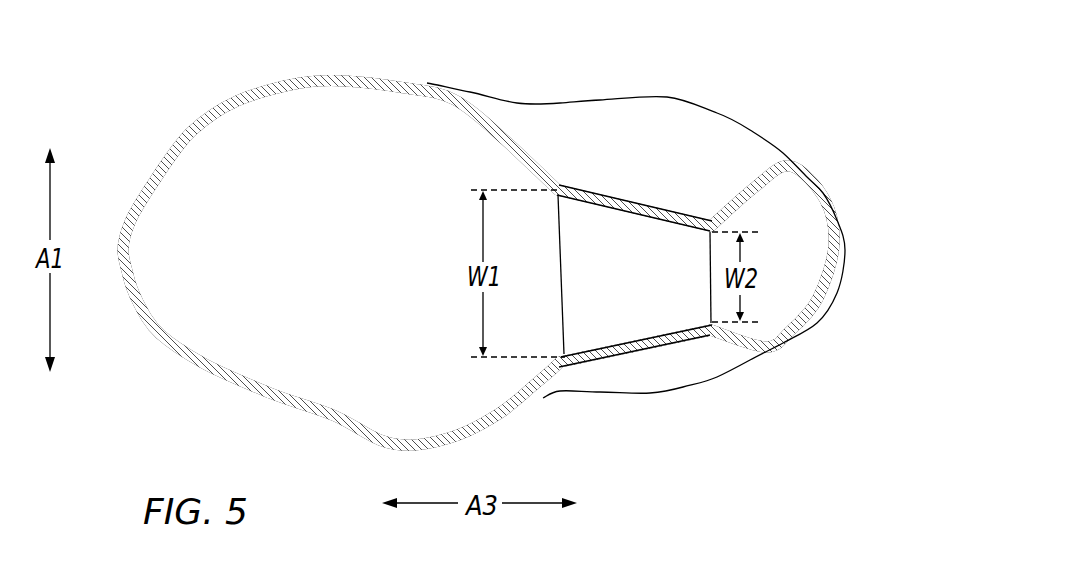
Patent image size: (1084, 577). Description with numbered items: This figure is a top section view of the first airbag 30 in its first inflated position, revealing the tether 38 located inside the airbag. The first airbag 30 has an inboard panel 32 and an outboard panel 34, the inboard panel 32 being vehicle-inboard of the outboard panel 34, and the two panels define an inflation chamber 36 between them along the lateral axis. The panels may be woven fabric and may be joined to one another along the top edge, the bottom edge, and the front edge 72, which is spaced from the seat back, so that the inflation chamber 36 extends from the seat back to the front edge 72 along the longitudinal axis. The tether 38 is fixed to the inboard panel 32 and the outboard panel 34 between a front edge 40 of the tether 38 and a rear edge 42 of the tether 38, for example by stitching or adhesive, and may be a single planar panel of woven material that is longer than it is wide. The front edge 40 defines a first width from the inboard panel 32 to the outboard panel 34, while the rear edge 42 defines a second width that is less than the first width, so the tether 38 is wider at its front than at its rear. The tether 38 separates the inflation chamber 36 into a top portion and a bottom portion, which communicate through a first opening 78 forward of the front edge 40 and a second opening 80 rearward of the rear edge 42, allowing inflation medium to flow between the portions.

The first airbag 30 is at (196, 80).
The inboard panel 32 is at (607, 193).
The outboard panel 34 is at (606, 358).
The inflation chamber 36 is at (195, 173).
The tether 38 is at (640, 293).
The front edge of the tether 40 is at (558, 248).
The rear edge of the tether 42 is at (709, 268).
The front edge of the first airbag 72 is at (172, 353).
The first opening 78 is at (350, 258).
The second opening 80 is at (806, 270).